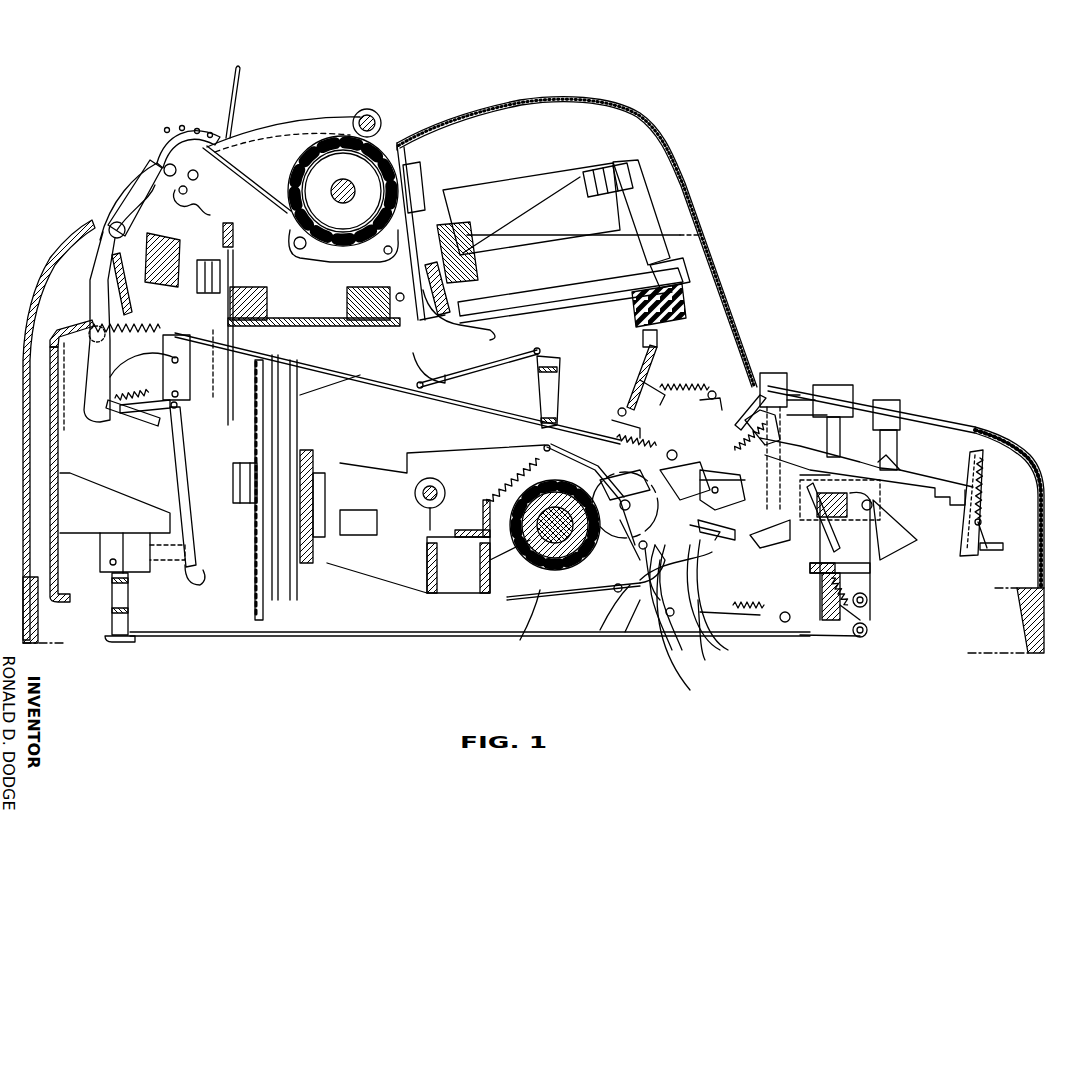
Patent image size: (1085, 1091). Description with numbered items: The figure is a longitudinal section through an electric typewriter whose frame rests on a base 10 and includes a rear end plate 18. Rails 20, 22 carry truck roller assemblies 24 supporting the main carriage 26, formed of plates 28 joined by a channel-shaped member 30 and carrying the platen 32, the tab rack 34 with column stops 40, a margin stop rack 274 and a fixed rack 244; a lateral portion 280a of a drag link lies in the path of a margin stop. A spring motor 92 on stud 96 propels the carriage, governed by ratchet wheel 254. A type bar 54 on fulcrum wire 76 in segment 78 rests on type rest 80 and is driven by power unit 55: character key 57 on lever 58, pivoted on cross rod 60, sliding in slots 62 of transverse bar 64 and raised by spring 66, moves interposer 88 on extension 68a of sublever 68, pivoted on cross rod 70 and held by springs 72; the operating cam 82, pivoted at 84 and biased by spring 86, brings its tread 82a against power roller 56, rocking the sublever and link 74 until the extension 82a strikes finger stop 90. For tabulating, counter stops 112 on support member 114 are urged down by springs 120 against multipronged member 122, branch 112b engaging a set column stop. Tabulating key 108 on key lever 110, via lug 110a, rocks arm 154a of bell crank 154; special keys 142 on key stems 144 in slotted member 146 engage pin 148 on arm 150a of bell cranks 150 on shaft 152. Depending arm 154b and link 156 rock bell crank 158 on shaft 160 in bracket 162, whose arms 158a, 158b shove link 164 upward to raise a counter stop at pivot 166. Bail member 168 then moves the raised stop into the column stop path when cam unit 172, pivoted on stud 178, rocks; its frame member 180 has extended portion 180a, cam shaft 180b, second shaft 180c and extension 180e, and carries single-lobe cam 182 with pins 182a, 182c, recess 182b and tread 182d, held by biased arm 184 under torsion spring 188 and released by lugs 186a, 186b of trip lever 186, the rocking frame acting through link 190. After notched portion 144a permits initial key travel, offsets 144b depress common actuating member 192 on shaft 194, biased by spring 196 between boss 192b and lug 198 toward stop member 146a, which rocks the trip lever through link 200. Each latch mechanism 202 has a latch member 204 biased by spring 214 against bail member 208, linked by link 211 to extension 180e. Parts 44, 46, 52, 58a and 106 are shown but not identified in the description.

The base 10 is at (35, 617).
The rear end plate 18 is at (53, 462).
The rail 20 is at (406, 232).
The rear carriage rail 22 is at (222, 280).
The truck roller assemblies 24 is at (275, 298).
The main carriage 26 is at (388, 113).
The carriage plates 28 is at (282, 150).
The channel-shaped member 30 is at (322, 327).
The platen 32 is at (380, 150).
The rack of column stops 34 is at (120, 223).
The column stop 40 is at (147, 230).
The lever 44 is at (108, 268).
The spring 46 is at (92, 324).
The lever 52 is at (137, 350).
The type bar 54 is at (572, 310).
The power unit 55 is at (605, 553).
The power roller 56 is at (538, 566).
The character key 57 is at (895, 447).
The key lever 58 is at (900, 472).
The spring 58a is at (695, 392).
The cross rod 60 is at (618, 412).
The slots 62 is at (978, 532).
The transverse bar 64 is at (985, 545).
The spring 66 is at (985, 480).
The sublever 68 is at (563, 378).
The sublever extension 68a is at (745, 480).
The cross rod 70 is at (658, 595).
The springs 72 is at (485, 492).
The link 74 is at (478, 370).
The curved fulcrum wire 76 is at (488, 337).
The segment 78 is at (473, 297).
The curved type rest 80 is at (684, 304).
The operating cam 82 is at (640, 580).
The tread bearing portion 82a is at (618, 588).
The cam pivot 84 is at (665, 480).
The spring 86 is at (615, 430).
The interposer 88 is at (716, 400).
The finger stop 90 is at (715, 548).
The spring motor 92 is at (290, 605).
The stud 96 is at (325, 475).
The hatched block 106 is at (477, 307).
The tabulating key 108 is at (822, 467).
The key lever 110 is at (923, 473).
The lug 110a is at (880, 430).
The counter stop 112 is at (170, 400).
The column stop engaging branch 112b is at (240, 262).
The support member 114 is at (239, 477).
The springs 120 is at (115, 407).
The multipronged member 122 is at (130, 418).
The special keys 142 is at (790, 395).
The key stem 144 is at (843, 395).
The notched portion 144a is at (786, 417).
The offsets 144b is at (787, 405).
The slotted member 146 is at (890, 400).
The stop member 146a is at (773, 441).
The pin 148 is at (740, 540).
The bell crank 150 is at (917, 531).
The arm 150a is at (780, 540).
The shaft 152 is at (873, 505).
The bell crank 154 is at (912, 548).
The arm 154a is at (850, 490).
The depending arm 154b is at (872, 578).
The link 156 is at (630, 632).
The bell crank 158 is at (105, 575).
The depending arm 158a is at (125, 605).
The horizontally extending arm 158b is at (162, 573).
The shaft 160 is at (108, 562).
The bracket 162 is at (110, 497).
The link 164 is at (150, 477).
The pivotal connection 166 is at (172, 407).
The bail member 168 is at (110, 377).
The cam unit 172 is at (520, 464).
The stud 178 is at (690, 672).
The frame member 180 is at (697, 572).
The extended portion 180a is at (620, 470).
The cam shaft 180b is at (492, 560).
The second shaft 180c is at (698, 655).
The extension 180e is at (706, 638).
The cam 182 is at (545, 442).
The pin 182a is at (483, 508).
The recessed portion 182b is at (545, 452).
The pin 182c is at (550, 590).
The tread surface 182d is at (520, 545).
The biased arm 184 is at (458, 561).
The trip lever 186 is at (708, 557).
The lug 186a is at (550, 580).
The lug 186b is at (600, 630).
The torsion spring 188 is at (718, 500).
The link 190 is at (360, 378).
The common power unit actuating member 192 is at (755, 395).
The boss 192b is at (700, 390).
The shaft 194 is at (750, 392).
The spring 196 is at (675, 382).
The lug 198 is at (665, 380).
The connecting link 200 is at (705, 444).
The latch mechanism 202 is at (765, 630).
The latch member 204 is at (832, 625).
The bail member 208 is at (870, 566).
The link 211 is at (730, 645).
The spring 214 is at (867, 600).
The fixed rack 244 is at (155, 283).
The ratchet wheel 254 is at (256, 437).
The margin stop rack 274 is at (232, 225).
The lateral extending portion 280a is at (282, 255).